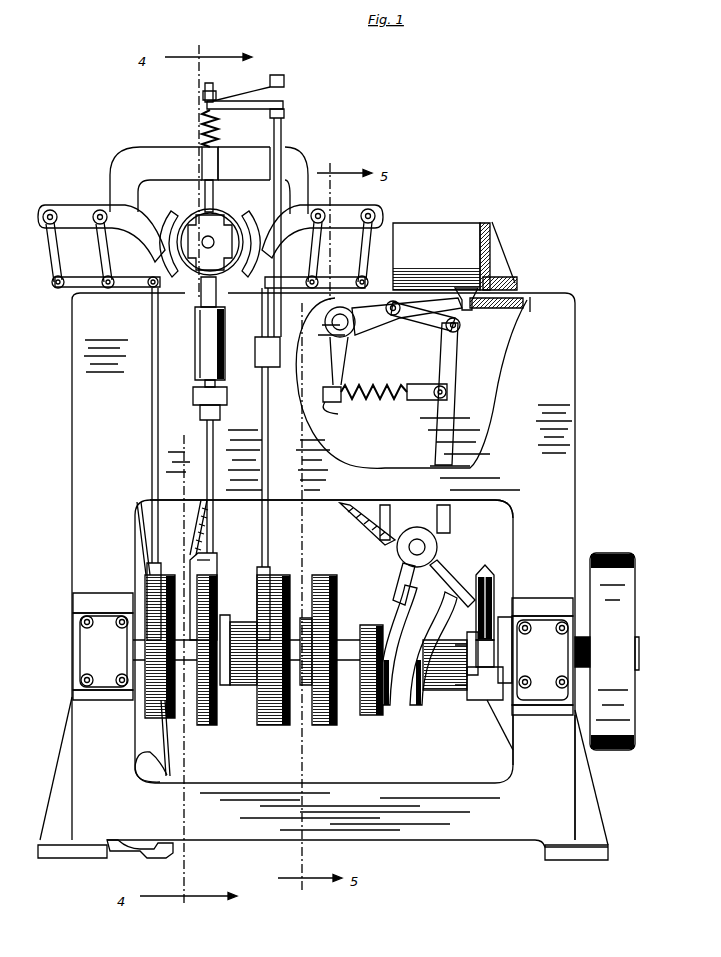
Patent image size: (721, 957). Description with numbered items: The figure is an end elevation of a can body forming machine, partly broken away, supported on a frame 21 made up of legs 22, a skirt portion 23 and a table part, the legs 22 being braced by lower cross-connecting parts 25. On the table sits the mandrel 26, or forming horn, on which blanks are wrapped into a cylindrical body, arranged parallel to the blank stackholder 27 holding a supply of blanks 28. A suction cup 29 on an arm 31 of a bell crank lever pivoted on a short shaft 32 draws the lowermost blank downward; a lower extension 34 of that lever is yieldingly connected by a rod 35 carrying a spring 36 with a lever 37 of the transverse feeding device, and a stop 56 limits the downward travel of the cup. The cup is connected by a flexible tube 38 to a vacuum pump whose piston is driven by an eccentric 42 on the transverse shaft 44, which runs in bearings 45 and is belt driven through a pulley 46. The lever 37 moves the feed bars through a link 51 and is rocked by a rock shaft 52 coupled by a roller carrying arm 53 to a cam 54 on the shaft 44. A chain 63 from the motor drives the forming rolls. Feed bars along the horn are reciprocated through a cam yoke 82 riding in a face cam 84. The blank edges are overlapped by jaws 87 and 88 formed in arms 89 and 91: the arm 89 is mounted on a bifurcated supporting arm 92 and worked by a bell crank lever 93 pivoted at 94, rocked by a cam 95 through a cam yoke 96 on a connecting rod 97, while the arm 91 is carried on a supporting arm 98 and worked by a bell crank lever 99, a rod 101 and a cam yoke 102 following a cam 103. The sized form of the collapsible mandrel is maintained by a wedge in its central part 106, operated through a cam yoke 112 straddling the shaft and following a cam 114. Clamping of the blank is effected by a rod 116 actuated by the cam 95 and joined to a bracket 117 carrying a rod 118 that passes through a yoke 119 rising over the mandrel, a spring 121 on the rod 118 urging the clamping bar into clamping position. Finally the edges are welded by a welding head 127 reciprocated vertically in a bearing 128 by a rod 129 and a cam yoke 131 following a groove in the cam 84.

The frame 21 is at (568, 318).
The legs 22 is at (555, 775).
The skirt portion 23 is at (458, 497).
The lower cross-connecting parts 25 is at (335, 793).
The mandrel 26 is at (228, 228).
The blank stackholder 27 is at (424, 236).
The blanks 28 is at (468, 272).
The suction cup 29 is at (495, 272).
The arm 31 is at (386, 322).
The short shaft 32 is at (349, 347).
The lower extension 34 is at (332, 362).
The rod 35 is at (340, 412).
The spring 36 is at (376, 396).
The lever 37 is at (456, 415).
The flexible tube 38 is at (366, 517).
The eccentric 42 is at (497, 586).
The transverse shaft 44 is at (584, 640).
The bearings 45 is at (105, 595).
The pulley 46 is at (623, 585).
The link 51 is at (430, 322).
The rock shaft 52 is at (410, 553).
The roller carrying arm 53 is at (405, 585).
The cam 54 is at (428, 712).
The stop 56 is at (466, 312).
The chain 63 is at (202, 530).
The cam yoke 82 is at (226, 615).
The face cam 84 is at (216, 716).
The jaw 87 is at (270, 243).
The jaw 88 is at (161, 217).
The arm 89 is at (305, 197).
The arm 91 is at (69, 207).
The bifurcated supporting arm 92 is at (370, 254).
The bell crank lever 93 is at (322, 256).
The pivot 94 is at (322, 283).
The cam 95 is at (268, 727).
The cam yoke 96 is at (260, 601).
The connecting rod 97 is at (268, 456).
The supporting arm 98 is at (52, 256).
The bell crank lever 99 is at (100, 268).
The rod 101 is at (152, 449).
The cam yoke 102 is at (157, 582).
The cam 103 is at (161, 705).
The central part 106 is at (213, 222).
The cam yoke 112 is at (312, 621).
The cam 114 is at (338, 716).
The rod 116 is at (283, 136).
The bracket 117 is at (256, 100).
The rod 118 is at (215, 91).
The yoke 119 is at (182, 152).
The spring 121 is at (219, 126).
The welding head 127 is at (217, 296).
The bearing 128 is at (210, 325).
The rod 129 is at (214, 476).
The cam yoke 131 is at (212, 560).